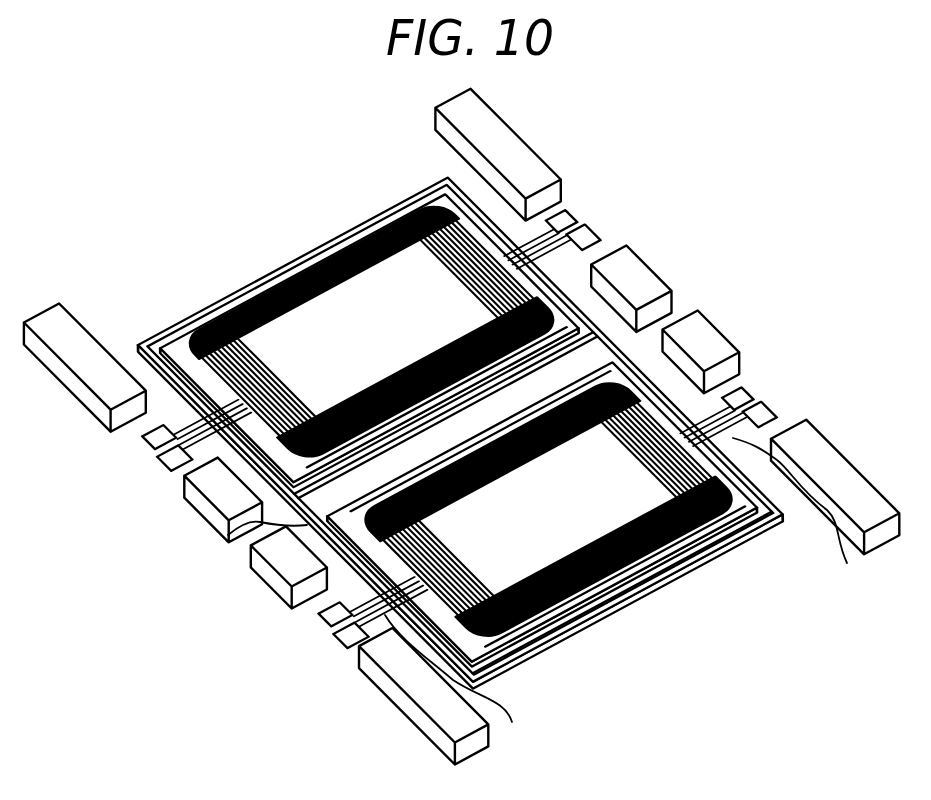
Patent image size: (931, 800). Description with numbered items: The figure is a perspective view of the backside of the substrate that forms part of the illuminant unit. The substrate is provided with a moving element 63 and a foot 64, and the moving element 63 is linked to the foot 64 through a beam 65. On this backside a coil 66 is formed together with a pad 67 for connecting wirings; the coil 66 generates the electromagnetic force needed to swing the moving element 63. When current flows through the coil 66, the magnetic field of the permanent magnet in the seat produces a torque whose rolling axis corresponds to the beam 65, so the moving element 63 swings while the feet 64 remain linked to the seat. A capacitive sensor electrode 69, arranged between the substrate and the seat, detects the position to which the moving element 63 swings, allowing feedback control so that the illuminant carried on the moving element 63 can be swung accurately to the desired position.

The moving element 63 is at (497, 540).
The foot 64 is at (407, 682).
The beam 65 is at (627, 595).
The coil 66 is at (657, 553).
The pad 67 is at (323, 643).
The capacitive sensor electrode 69 is at (228, 535).